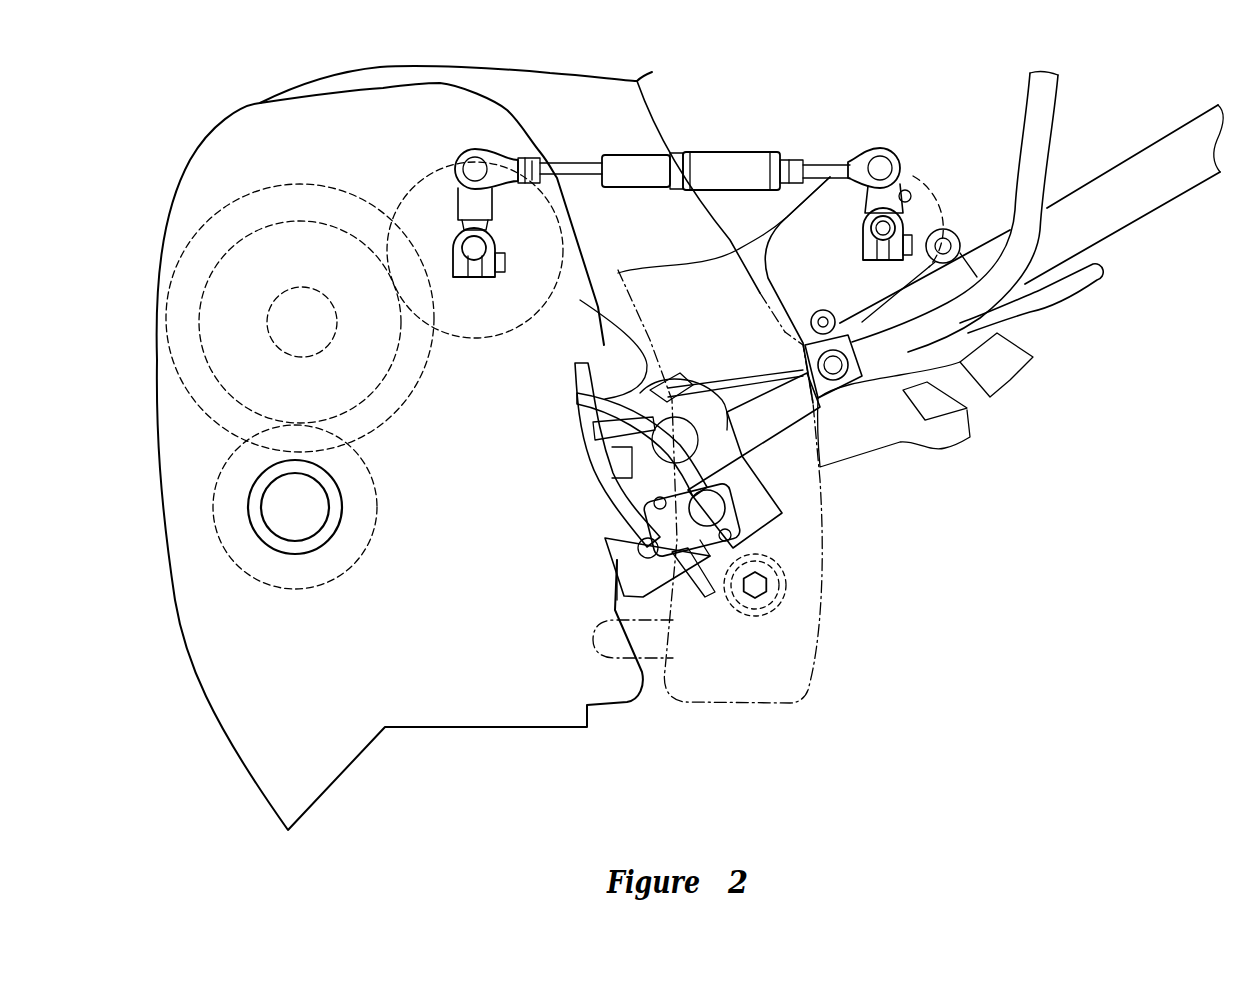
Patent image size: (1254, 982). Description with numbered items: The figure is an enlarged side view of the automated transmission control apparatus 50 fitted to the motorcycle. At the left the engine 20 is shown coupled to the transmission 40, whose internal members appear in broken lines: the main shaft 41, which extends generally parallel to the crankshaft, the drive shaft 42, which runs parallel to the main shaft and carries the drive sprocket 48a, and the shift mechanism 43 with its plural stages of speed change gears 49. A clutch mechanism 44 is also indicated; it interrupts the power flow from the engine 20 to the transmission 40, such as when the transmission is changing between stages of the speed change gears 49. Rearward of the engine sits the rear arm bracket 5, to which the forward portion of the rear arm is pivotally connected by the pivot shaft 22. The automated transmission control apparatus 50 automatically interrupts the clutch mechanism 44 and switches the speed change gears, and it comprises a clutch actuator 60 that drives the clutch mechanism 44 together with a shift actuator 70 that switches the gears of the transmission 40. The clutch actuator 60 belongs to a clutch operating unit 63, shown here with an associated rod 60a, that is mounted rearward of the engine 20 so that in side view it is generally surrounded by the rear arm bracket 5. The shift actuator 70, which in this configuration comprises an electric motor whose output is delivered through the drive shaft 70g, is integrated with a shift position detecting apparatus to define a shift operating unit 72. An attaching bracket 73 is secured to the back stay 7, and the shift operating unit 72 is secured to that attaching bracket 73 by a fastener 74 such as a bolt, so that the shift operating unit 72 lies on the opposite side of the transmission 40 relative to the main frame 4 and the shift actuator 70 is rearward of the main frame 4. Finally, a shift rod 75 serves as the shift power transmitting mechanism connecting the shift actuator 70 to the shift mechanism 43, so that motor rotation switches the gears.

The main frame 4 is at (703, 127).
The rear arm bracket 5 is at (699, 671).
The back stay 7 is at (1140, 205).
The engine 20 is at (515, 718).
The pivot shaft 22 is at (757, 596).
The transmission 40 is at (177, 243).
The main shaft 41 is at (312, 325).
The drive shaft 42 is at (312, 510).
The shift mechanism 43 is at (475, 292).
The clutch mechanism 44 is at (263, 182).
The drive sprocket 48a is at (295, 555).
The speed change gears 49 is at (497, 322).
The automated transmission control apparatus 50 is at (831, 80).
The clutch actuator 60 is at (761, 553).
The actuator rod 60a is at (693, 423).
The clutch operating unit 63 is at (794, 505).
The shift actuator 70 is at (885, 136).
The drive shaft 70g is at (885, 229).
The shift operating unit 72 is at (978, 132).
The attaching bracket 73 is at (894, 343).
The fastener 74 is at (950, 246).
The shift rod 75 is at (737, 157).